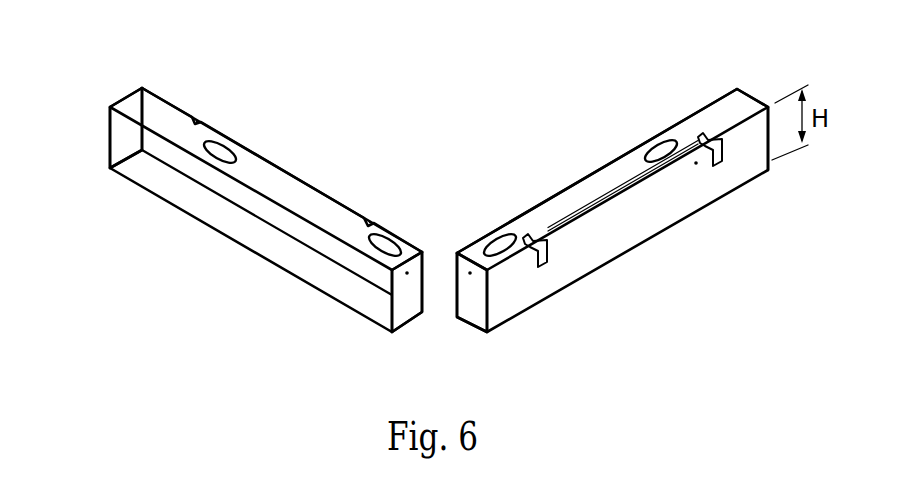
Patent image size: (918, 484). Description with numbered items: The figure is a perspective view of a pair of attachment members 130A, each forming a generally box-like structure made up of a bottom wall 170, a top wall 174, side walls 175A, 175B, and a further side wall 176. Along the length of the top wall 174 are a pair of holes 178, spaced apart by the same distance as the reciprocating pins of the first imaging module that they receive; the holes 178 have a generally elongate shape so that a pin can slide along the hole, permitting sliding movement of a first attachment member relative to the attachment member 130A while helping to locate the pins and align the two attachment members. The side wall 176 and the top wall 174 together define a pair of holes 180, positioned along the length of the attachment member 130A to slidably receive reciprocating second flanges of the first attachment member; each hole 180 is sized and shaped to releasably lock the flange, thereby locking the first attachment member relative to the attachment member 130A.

The attachment member 130A is at (288, 103).
The bottom wall 170 is at (263, 244).
The top wall 174 is at (303, 186).
The side wall 175A is at (478, 310).
The side wall 175B is at (120, 134).
The side wall 176 is at (205, 178).
The hole 178 is at (212, 146).
The hole 180 is at (545, 272).